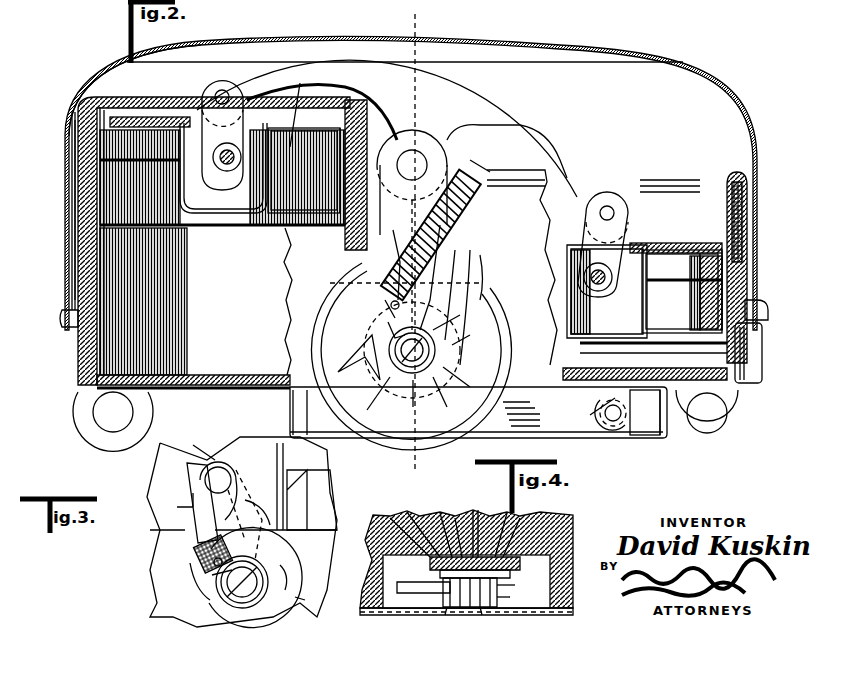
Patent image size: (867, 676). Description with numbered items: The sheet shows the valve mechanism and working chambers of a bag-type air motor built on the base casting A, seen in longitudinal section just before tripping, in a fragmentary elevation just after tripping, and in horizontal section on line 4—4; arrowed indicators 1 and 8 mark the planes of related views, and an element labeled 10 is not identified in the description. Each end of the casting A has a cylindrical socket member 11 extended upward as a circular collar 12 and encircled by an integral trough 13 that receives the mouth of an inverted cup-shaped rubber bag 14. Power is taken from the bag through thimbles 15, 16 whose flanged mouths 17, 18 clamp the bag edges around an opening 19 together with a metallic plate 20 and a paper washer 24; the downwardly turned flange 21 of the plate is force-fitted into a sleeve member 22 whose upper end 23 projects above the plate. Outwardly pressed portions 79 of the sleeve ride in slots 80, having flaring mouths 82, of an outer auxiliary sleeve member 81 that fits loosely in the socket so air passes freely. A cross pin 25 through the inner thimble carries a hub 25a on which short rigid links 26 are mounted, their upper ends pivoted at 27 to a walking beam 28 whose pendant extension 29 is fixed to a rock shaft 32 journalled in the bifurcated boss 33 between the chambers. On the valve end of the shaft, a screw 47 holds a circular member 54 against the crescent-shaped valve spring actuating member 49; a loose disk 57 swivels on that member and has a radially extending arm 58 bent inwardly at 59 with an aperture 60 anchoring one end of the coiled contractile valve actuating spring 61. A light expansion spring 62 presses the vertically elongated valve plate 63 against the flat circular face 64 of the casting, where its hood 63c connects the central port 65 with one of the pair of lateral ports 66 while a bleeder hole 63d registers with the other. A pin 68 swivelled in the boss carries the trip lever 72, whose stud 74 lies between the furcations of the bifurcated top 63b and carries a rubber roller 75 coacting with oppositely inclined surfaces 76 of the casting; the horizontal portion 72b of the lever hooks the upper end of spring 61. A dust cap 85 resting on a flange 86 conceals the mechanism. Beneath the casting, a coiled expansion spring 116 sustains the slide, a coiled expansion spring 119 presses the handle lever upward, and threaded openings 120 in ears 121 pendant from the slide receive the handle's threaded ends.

In FIG. 2, the section line 1- 1 is at (52, 100).
In FIG. 2, the section line 4— 4 is at (323, 352).
In FIG. 2, the section line 8- 8 is at (388, 22).
In FIG. 2, the casing 10 is at (411, 183).
In FIG. 2, the cylindrical socket member 11 is at (100, 370).
In FIG. 2, the circular collar 12 is at (75, 250).
In FIG. 2, the integral trough 13 is at (70, 325).
In FIG. 2, the rubber bag 14 is at (78, 207).
In FIG. 2, the thimble 15 is at (192, 225).
In FIG. 2, the thimble 16 is at (275, 215).
In FIG. 2, the flanged mouth 17 is at (296, 150).
In FIG. 2, the flanged mouth 18 is at (700, 243).
In FIG. 2, the opening 19 is at (153, 123).
In FIG. 2, the metallic plate 20 is at (100, 150).
In FIG. 2, the downwardly turned flange 21 is at (300, 160).
In FIG. 2, the sleeve member 22 is at (400, 138).
In FIG. 2, the upper end of sleeve 23 is at (373, 110).
In FIG. 2, the paper washer 24 is at (123, 100).
In FIG. 2, the cross pin 25 is at (227, 143).
In FIG. 2, the hub 25a is at (290, 143).
In FIG. 2, the short rigid link 26 is at (243, 120).
In FIG. 2, the pivotal connection 27 is at (215, 97).
In FIG. 2, the walking beam 28 is at (520, 122).
In FIG. 2, the pendant extension 29 is at (450, 140).
In FIG. 2, the rock shaft 32 is at (412, 165).
In FIG. 2, the boss 33 is at (481, 162).
In FIG. 2, the screw 47 is at (463, 390).
In FIG. 3, the screw 47 is at (255, 583).
In FIG. 4, the screw 47 is at (470, 592).
In FIG. 2, the valve spring actuating member 49 is at (371, 394).
In FIG. 3, the valve spring actuating member 49 is at (157, 603).
In FIG. 4, the valve spring actuating member 49 is at (517, 585).
In FIG. 2, the circular member 54 is at (418, 371).
In FIG. 3, the circular member 54 is at (300, 597).
In FIG. 4, the circular member 54 is at (485, 610).
In FIG. 2, the disk 57 is at (406, 376).
In FIG. 3, the disk 57 is at (234, 590).
In FIG. 4, the disk 57 is at (514, 599).
In FIG. 2, the radially extending arm 58 is at (388, 322).
In FIG. 3, the radially extending arm 58 is at (222, 575).
In FIG. 4, the radially extending arm 58 is at (445, 612).
In FIG. 2, the angular bend 59 is at (383, 300).
In FIG. 3, the angular bend 59 is at (215, 562).
In FIG. 4, the angular bend 59 is at (420, 593).
In FIG. 2, the aperture 60 is at (392, 302).
In FIG. 3, the aperture 60 is at (212, 547).
In FIG. 2, the coiled contractile valve actuating spring 61 is at (470, 210).
In FIG. 3, the coiled contractile valve actuating spring 61 is at (193, 445).
In FIG. 4, the coiled expansion spring 62 is at (440, 573).
In FIG. 2, the valve plate 63 is at (440, 305).
In FIG. 3, the valve plate 63 is at (281, 578).
In FIG. 4, the valve plate 63 is at (560, 550).
In FIG. 3, the bifurcated top 63b is at (190, 492).
In FIG. 2, the arcuate recess 63c is at (462, 302).
In FIG. 4, the arcuate recess 63c is at (520, 560).
In FIG. 4, the bleeder hole 63d is at (580, 585).
In FIG. 2, the flat circular face 64 is at (450, 360).
In FIG. 3, the flat circular face 64 is at (280, 565).
In FIG. 4, the flat circular face 64 is at (410, 520).
In FIG. 2, the central port 65 is at (419, 283).
In FIG. 4, the central port 65 is at (475, 510).
In FIG. 2, the lateral port 66 is at (476, 346).
In FIG. 4, the lateral port 66 is at (447, 520).
In FIG. 3, the pin 68 is at (273, 487).
In FIG. 2, the trip lever 72 is at (468, 258).
In FIG. 2, the horizontally disposed portion 72b is at (500, 180).
In FIG. 2, the stud 74 is at (470, 250).
In FIG. 3, the stud 74 is at (205, 482).
In FIG. 2, the rubber roller 75 is at (415, 218).
In FIG. 2, the inclined surface 76 is at (395, 255).
In FIG. 3, the inclined surface 76 is at (270, 517).
In FIG. 2, the outwardly pressed portion 79 is at (78, 232).
In FIG. 2, the slot 80 is at (100, 255).
In FIG. 2, the outer auxiliary sleeve member 81 is at (100, 180).
In FIG. 2, the flaring mouth 82 is at (75, 280).
In FIG. 2, the dust cap 85 is at (326, 38).
In FIG. 2, the flange 86 is at (766, 314).
In FIG. 2, the coiled expansion spring 116 is at (590, 435).
In FIG. 2, the coiled expansion spring 119 is at (520, 438).
In FIG. 2, the threaded opening 120 is at (600, 412).
In FIG. 2, the ear 121 is at (645, 435).
In FIG. 2, the base casting A is at (88, 391).